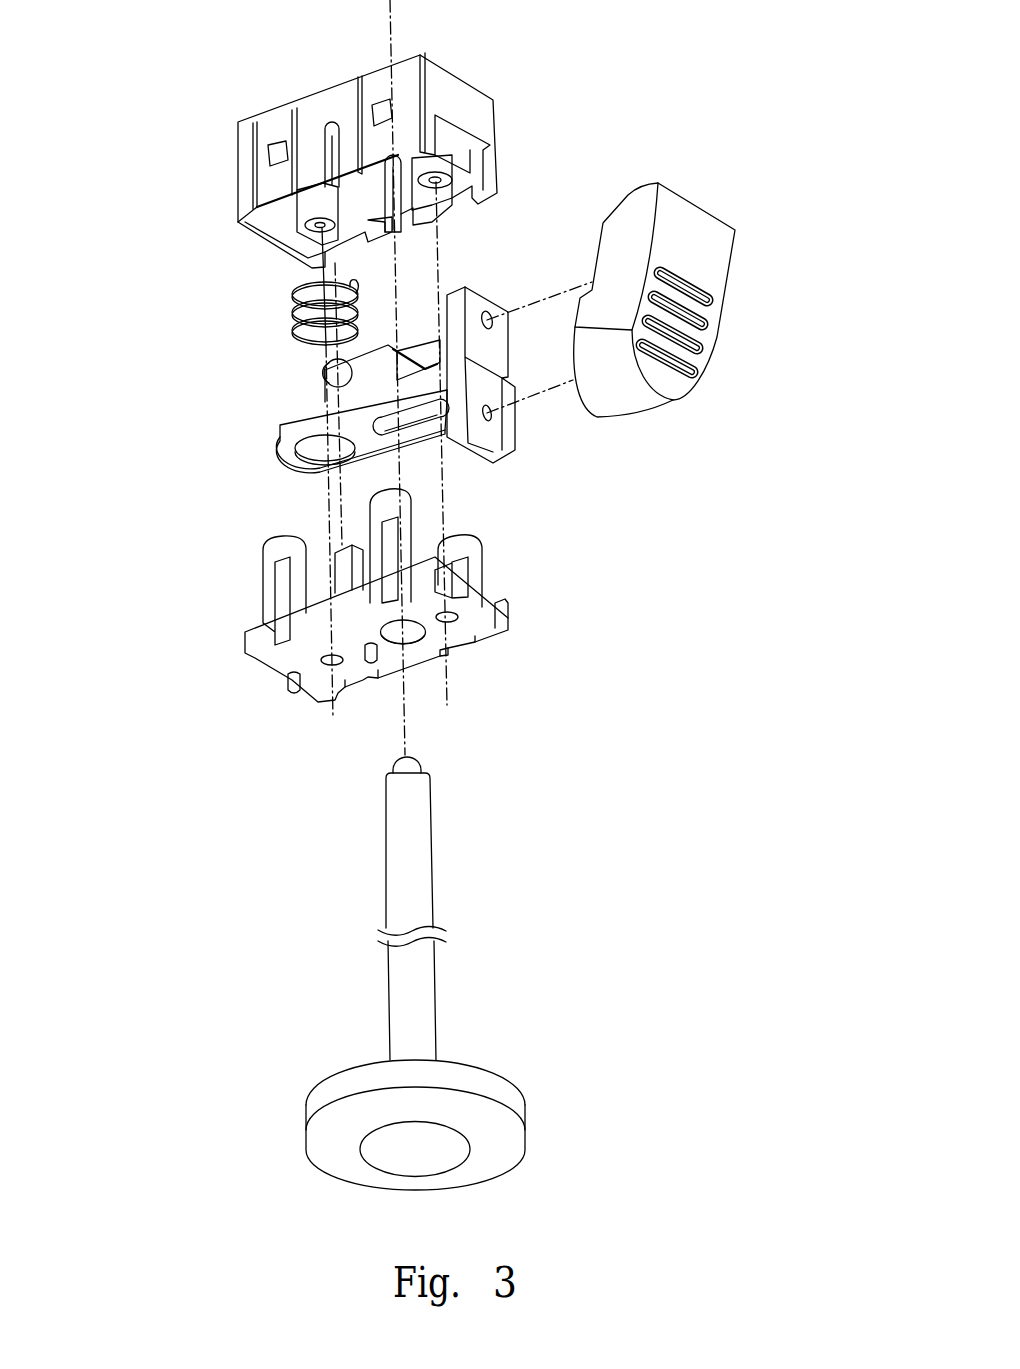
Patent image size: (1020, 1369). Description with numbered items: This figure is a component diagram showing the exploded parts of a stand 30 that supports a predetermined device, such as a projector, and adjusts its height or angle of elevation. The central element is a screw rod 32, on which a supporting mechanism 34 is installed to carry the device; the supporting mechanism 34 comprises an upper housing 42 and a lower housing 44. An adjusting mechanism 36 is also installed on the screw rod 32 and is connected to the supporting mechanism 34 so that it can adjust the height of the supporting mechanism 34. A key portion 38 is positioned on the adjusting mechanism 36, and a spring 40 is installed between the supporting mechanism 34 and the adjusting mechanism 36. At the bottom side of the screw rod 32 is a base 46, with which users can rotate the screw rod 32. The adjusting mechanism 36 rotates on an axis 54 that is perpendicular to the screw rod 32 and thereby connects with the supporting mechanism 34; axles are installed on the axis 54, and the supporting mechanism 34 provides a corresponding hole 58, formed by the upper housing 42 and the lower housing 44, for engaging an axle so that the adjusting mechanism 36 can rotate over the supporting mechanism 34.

The stand 30 is at (692, 65).
The screw rod 32 is at (425, 858).
The supporting mechanism 34 is at (175, 232).
The adjusting mechanism 36 is at (280, 436).
The key portion 38 is at (707, 263).
The spring 40 is at (296, 298).
The upper housing 42 is at (240, 133).
The lower housing 44 is at (490, 618).
The base 46 is at (515, 1105).
The axis 54 is at (323, 368).
The hole 58 is at (327, 120).